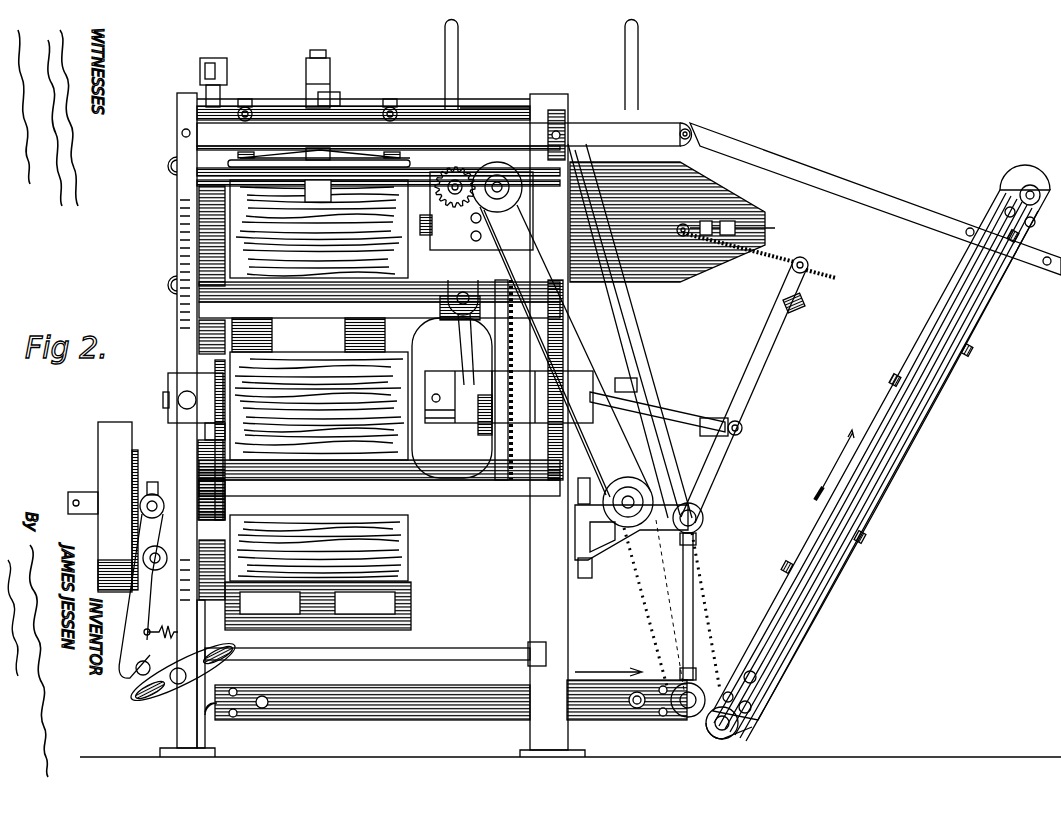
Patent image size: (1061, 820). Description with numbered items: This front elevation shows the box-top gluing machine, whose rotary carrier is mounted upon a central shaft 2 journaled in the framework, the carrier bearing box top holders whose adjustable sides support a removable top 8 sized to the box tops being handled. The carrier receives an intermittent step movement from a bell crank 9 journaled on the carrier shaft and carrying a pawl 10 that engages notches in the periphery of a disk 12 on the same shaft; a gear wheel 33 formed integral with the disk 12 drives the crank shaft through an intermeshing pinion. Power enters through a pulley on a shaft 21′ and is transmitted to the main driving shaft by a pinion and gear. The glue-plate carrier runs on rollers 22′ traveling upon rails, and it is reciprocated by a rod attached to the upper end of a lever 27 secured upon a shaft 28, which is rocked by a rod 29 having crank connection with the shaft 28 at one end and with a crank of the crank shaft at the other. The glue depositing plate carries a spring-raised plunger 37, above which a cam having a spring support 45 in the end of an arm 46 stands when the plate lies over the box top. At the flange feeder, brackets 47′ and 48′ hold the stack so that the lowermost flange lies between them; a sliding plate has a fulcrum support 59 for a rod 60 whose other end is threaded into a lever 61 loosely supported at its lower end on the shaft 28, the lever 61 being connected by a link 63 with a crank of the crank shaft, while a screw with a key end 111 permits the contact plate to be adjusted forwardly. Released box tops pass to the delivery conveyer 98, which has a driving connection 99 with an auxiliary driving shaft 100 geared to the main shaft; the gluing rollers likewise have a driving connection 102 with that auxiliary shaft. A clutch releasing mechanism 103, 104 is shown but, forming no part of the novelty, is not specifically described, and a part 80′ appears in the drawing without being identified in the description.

The central shaft 2 is at (166, 393).
The removable top 8 is at (319, 380).
The bell crank 9 is at (470, 415).
The pawl 10 is at (498, 420).
The disk 12 is at (500, 455).
The shaft 21′ is at (66, 505).
The rollers 22′ is at (254, 106).
The lever 27 is at (640, 330).
The shaft 28 is at (705, 518).
The rod 29 is at (640, 382).
The gear wheel 33 is at (540, 490).
The plunger 37 is at (330, 100).
The spring support 45 is at (330, 74).
The arm 46 is at (222, 82).
The brackets 47′ is at (458, 43).
The brackets 48′ is at (638, 52).
The fulcrum support 59 is at (690, 262).
The rod 60 is at (812, 276).
The lever 61 is at (752, 385).
The link 63 is at (690, 420).
The guide rail 80′ is at (472, 108).
The delivery conveyer 98 is at (884, 466).
The driving connection 99 is at (700, 630).
The auxiliary driving shaft 100 is at (628, 500).
The driving connection 102 is at (600, 358).
The clutch releasing mechanism 103 is at (138, 596).
The clutch releasing mechanism 104 is at (156, 706).
The key end 111 is at (740, 228).